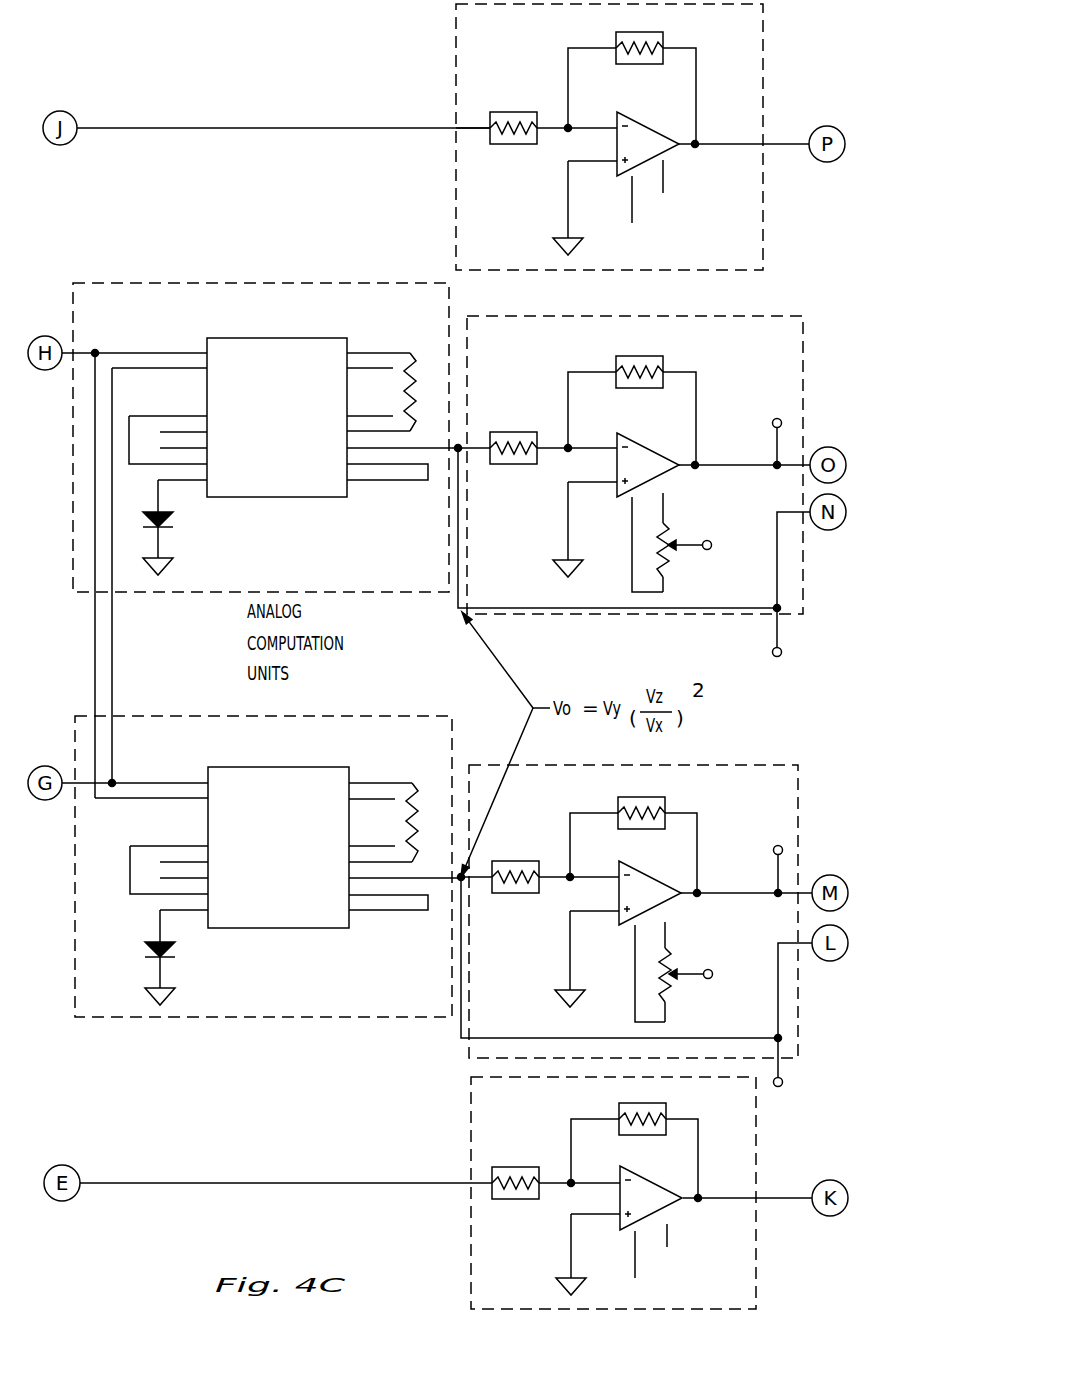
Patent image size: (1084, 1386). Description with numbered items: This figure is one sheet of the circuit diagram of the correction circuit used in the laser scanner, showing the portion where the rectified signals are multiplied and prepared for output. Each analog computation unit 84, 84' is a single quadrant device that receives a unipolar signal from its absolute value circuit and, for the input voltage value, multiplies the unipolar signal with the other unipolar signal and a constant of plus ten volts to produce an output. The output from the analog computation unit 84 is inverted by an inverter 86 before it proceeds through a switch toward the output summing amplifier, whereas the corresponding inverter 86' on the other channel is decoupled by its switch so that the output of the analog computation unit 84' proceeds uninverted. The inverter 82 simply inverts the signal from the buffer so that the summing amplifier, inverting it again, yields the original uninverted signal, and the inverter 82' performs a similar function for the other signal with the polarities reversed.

The inverter 82' is at (596, 137).
The analog computation unit 84' is at (260, 404).
The inverter 86' is at (657, 468).
The analog computation unit 84 is at (261, 833).
The inverter 86 is at (648, 907).
The inverter 82 is at (603, 1182).